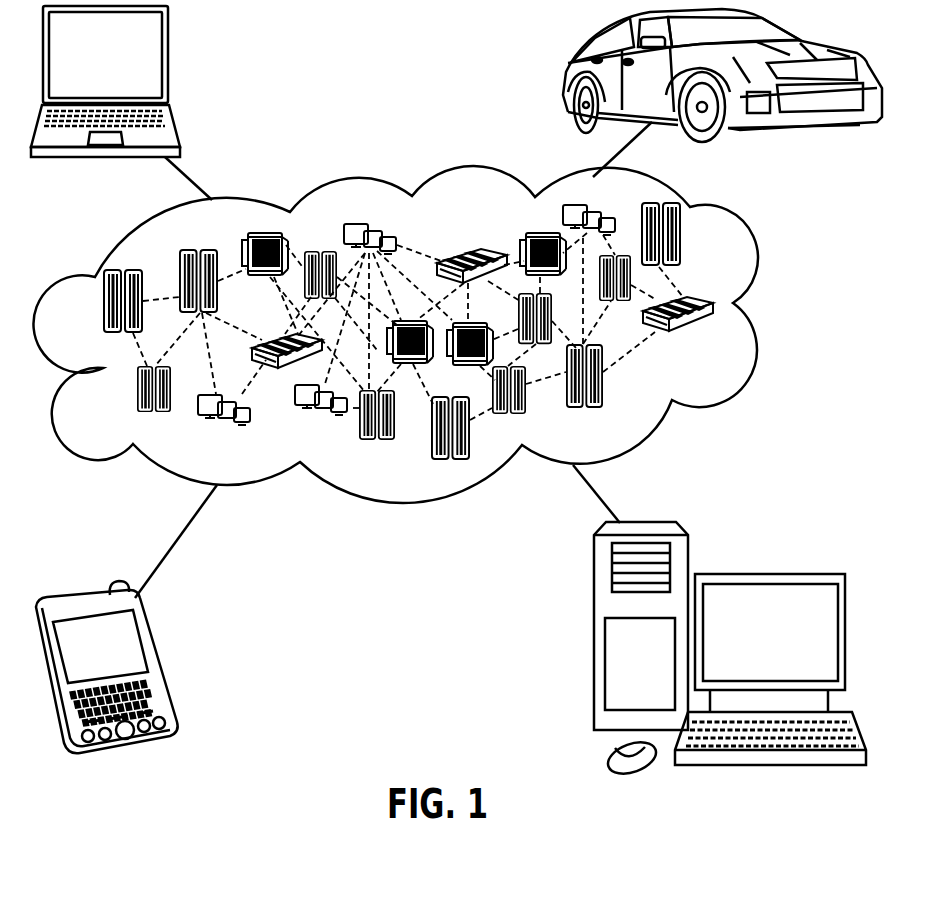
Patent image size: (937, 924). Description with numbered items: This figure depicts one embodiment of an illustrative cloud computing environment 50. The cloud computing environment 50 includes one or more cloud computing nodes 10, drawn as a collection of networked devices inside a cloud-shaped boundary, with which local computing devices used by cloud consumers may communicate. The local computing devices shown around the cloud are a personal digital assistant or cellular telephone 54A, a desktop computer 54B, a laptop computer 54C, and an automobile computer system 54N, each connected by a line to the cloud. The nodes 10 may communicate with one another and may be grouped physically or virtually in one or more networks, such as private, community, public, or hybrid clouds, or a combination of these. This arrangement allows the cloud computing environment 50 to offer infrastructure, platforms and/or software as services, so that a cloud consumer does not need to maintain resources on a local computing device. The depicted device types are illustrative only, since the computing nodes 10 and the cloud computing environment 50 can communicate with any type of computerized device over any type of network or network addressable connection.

The cloud computing environment 50 is at (768, 312).
The cloud computing nodes 10 is at (722, 338).
The personal digital assistant or cellular telephone 54A is at (158, 654).
The desktop computer 54B is at (766, 574).
The laptop computer 54C is at (168, 63).
The automobile computer system 54N is at (567, 78).